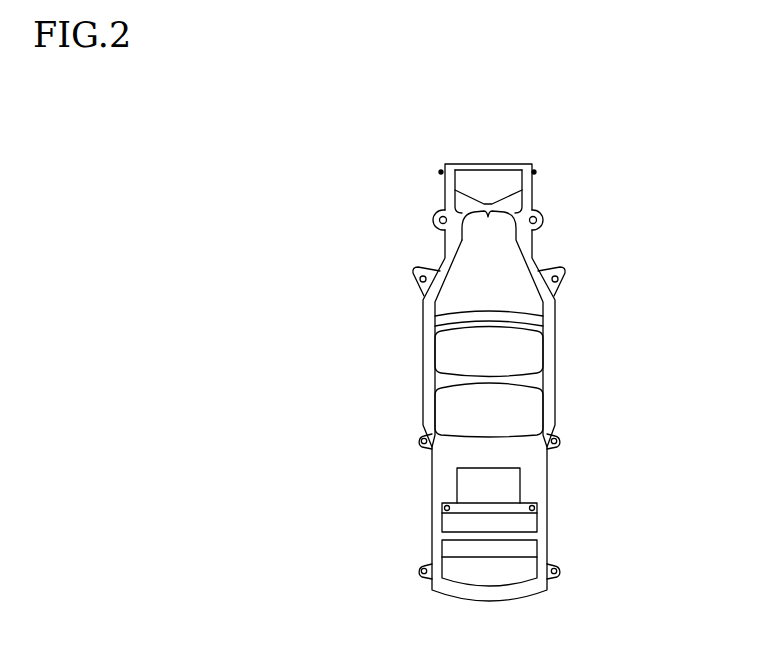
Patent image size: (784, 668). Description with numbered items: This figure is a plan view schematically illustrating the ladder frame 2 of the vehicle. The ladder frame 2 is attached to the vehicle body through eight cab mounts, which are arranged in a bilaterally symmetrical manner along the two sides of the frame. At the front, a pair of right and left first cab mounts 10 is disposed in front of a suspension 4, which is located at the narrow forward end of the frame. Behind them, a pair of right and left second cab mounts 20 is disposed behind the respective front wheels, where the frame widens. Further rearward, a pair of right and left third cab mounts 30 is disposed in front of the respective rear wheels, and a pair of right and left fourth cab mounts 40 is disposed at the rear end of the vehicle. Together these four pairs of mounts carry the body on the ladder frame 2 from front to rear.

The ladder frame 2 is at (557, 360).
The suspension 4 is at (489, 206).
The first cab mounts 10 is at (439, 172).
The second cab mounts 20 is at (414, 270).
The third cab mounts 30 is at (419, 443).
The fourth cab mounts 40 is at (419, 573).